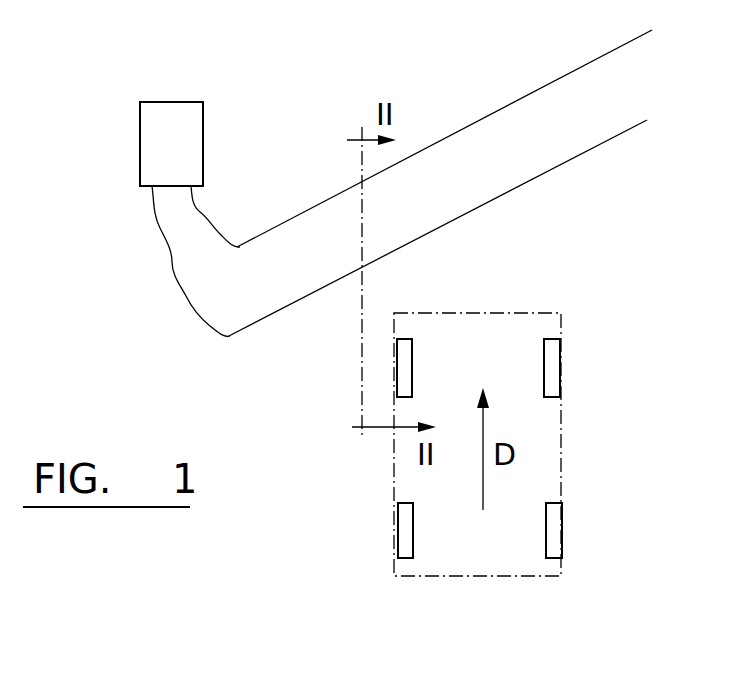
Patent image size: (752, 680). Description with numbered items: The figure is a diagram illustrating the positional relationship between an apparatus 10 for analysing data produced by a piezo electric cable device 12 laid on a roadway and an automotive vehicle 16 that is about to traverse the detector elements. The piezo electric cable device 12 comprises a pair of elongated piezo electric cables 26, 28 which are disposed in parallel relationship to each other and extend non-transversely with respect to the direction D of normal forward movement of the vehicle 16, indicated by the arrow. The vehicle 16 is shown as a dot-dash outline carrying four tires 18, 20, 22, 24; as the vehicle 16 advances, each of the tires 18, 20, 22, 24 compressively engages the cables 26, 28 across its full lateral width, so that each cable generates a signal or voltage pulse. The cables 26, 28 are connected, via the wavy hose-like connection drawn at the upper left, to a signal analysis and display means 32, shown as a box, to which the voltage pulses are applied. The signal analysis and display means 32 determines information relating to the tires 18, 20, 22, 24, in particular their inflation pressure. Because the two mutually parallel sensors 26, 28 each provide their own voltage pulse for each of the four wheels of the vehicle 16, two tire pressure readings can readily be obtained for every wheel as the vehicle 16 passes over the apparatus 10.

The apparatus 10 is at (141, 234).
The piezo electric cable device 12 is at (458, 169).
The automotive vehicle 16 is at (562, 577).
The tire 18 is at (405, 363).
The tire 20 is at (555, 365).
The tire 22 is at (555, 527).
The tire 24 is at (405, 527).
The piezo electric cable 26 is at (534, 179).
The piezo electric cable 28 is at (500, 109).
The signal analysis and display means 32 is at (166, 141).